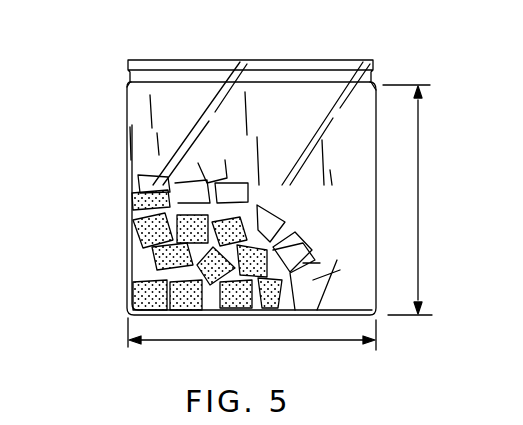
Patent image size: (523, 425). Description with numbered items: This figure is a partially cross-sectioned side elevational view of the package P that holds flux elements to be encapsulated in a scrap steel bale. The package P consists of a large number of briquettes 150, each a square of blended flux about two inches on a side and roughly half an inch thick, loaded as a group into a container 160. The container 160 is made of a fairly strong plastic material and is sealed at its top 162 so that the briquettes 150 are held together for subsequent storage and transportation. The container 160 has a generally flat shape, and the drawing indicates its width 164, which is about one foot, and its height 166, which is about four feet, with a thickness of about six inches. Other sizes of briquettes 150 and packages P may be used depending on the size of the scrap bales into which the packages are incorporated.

The package P is at (125, 108).
The briquettes 150 is at (138, 222).
The container 160 is at (127, 253).
The top 162 is at (317, 80).
The width 164 is at (233, 341).
The height 166 is at (432, 190).